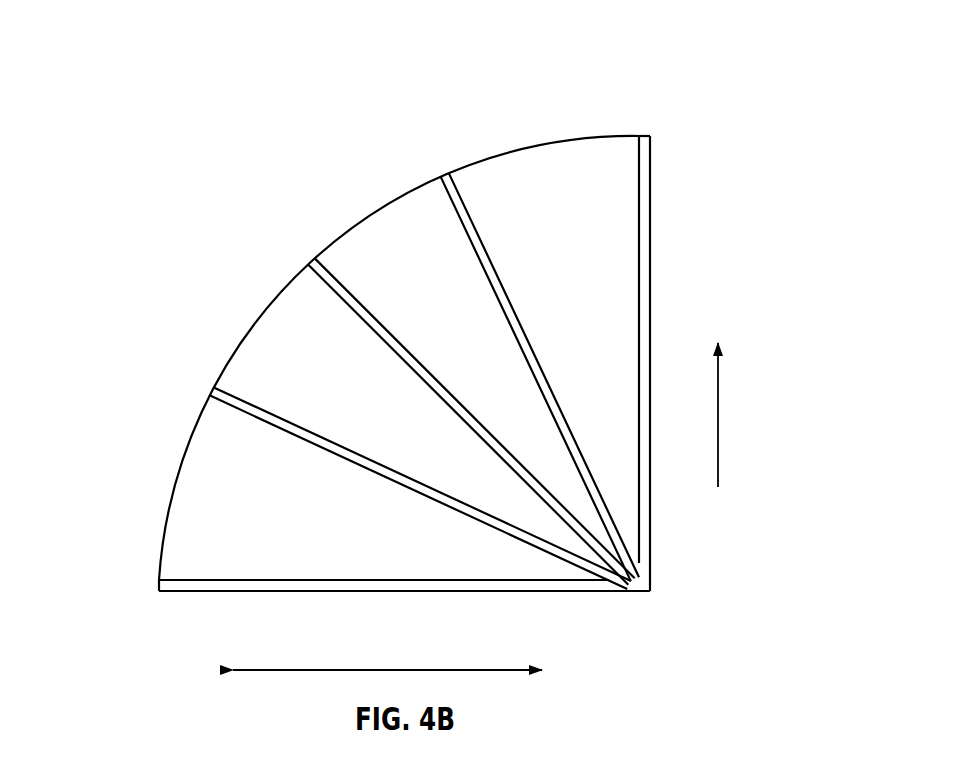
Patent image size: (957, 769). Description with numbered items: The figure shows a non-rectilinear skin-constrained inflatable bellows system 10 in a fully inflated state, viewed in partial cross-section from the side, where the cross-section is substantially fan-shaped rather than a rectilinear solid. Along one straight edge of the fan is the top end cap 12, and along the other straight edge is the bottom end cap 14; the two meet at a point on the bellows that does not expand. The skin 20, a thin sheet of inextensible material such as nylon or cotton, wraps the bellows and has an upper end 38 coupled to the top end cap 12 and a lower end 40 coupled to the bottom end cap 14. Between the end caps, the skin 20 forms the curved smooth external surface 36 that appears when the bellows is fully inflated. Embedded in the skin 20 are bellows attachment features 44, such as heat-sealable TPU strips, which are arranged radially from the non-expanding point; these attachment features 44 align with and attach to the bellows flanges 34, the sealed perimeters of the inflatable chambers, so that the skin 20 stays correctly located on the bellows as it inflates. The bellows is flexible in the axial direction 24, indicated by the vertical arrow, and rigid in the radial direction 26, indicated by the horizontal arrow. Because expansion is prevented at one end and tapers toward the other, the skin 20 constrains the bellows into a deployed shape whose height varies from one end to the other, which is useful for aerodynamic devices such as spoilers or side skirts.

The skin-constrained inflatable bellows system 10 is at (708, 58).
The top end cap 12 is at (655, 268).
The bottom end cap 14 is at (347, 593).
The skin 20 is at (370, 215).
The axial direction 24 is at (720, 415).
The radial direction 26 is at (388, 668).
The bellows flange 34 is at (408, 367).
The smooth external surface 36 is at (231, 343).
The upper end 38 is at (633, 135).
The lower end 40 is at (158, 591).
The bellows attachment feature 44 is at (178, 579).